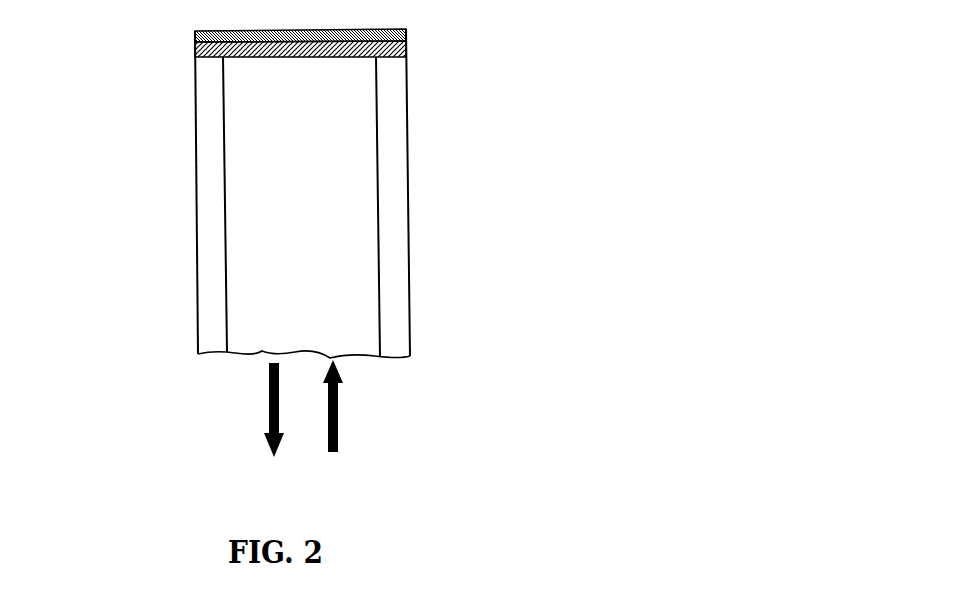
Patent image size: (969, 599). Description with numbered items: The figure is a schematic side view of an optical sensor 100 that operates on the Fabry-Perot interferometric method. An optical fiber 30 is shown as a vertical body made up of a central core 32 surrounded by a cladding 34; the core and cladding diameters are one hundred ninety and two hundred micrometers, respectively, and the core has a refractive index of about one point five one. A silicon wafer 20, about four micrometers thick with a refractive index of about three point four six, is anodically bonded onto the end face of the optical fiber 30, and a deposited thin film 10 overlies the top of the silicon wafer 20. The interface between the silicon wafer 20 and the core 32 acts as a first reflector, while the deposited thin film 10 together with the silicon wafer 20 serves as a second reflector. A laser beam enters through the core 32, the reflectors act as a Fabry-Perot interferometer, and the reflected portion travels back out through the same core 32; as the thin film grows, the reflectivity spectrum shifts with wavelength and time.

The deposited thin film 10 is at (408, 33).
The silicon wafer 20 is at (408, 53).
The optical fiber 30 is at (157, 265).
The core 32 is at (319, 133).
The cladding 34 is at (386, 224).
The optical sensor 100 is at (757, 160).